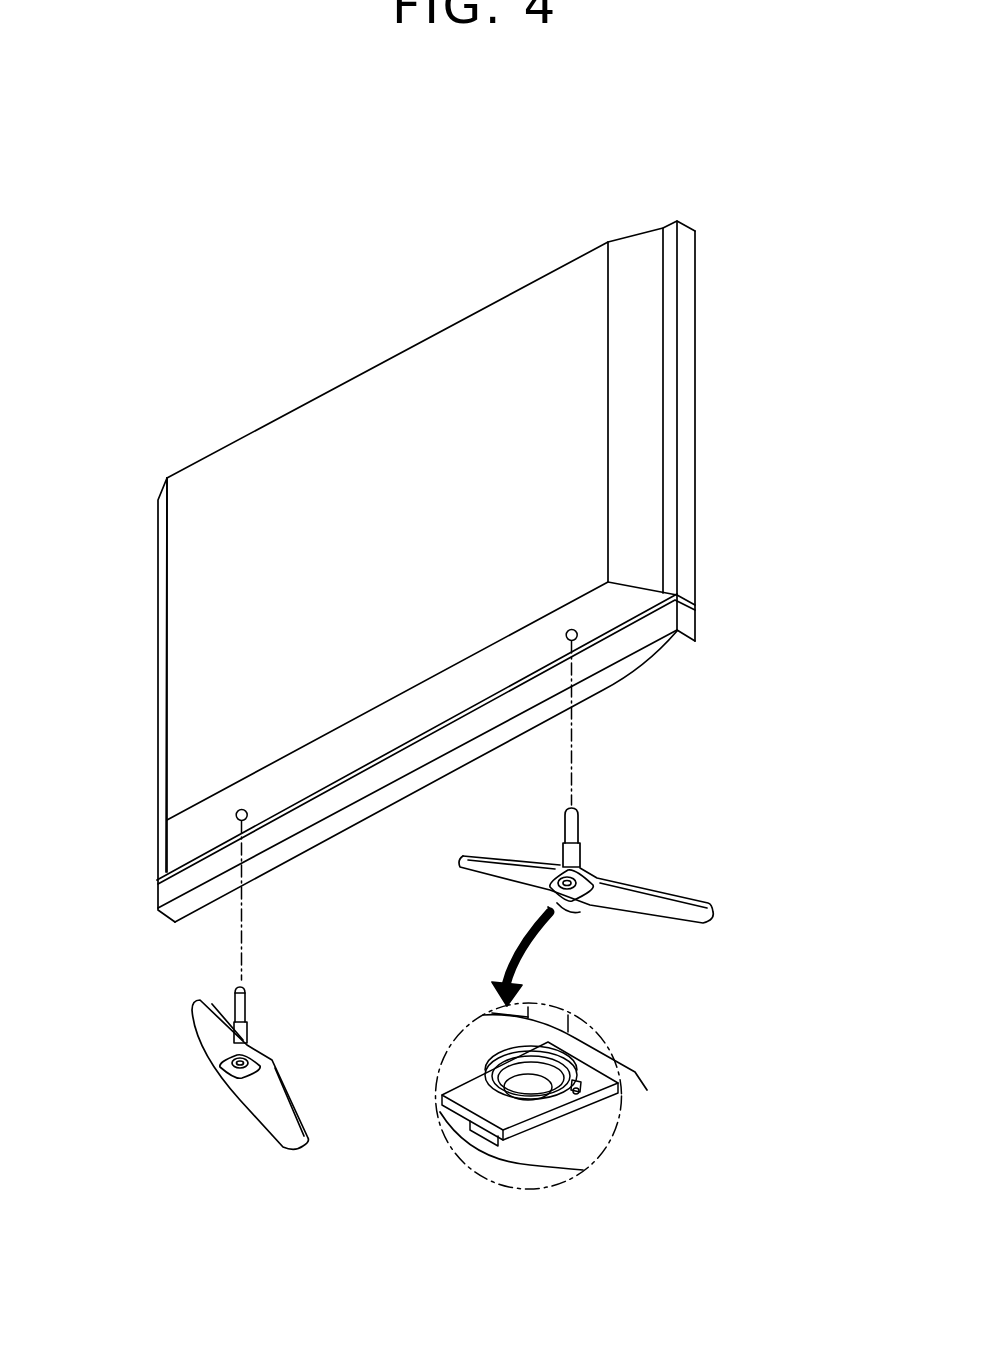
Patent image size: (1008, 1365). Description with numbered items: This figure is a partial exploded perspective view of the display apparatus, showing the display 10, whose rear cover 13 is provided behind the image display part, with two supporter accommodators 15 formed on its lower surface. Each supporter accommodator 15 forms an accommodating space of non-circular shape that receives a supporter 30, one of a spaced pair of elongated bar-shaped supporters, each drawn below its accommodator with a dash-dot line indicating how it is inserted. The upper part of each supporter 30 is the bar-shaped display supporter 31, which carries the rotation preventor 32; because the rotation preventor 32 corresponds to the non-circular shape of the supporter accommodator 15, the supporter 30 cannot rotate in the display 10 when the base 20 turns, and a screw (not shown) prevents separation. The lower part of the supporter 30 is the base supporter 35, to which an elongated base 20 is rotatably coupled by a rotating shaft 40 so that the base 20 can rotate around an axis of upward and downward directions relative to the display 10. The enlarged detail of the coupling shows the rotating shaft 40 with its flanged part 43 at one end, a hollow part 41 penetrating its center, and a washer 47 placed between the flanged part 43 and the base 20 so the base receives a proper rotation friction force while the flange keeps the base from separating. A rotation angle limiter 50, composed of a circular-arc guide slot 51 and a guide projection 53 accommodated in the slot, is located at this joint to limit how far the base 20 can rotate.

The display 10 is at (308, 372).
The rear cover 13 is at (178, 683).
The supporter accommodator 15 is at (237, 818).
The base 20 is at (197, 1047).
The supporter 30 is at (228, 993).
The display supporter 31 is at (245, 990).
The rotation preventor 32 is at (235, 991).
The base supporter 35 is at (247, 1042).
The rotating shaft 40 is at (530, 1166).
The hollow part 41 is at (535, 1092).
The flanged part 43 is at (527, 1093).
The washer 47 is at (497, 1080).
The rotation angle limiter 50 is at (660, 1087).
The guide slot 51 is at (577, 1064).
The guide projection 53 is at (578, 1091).